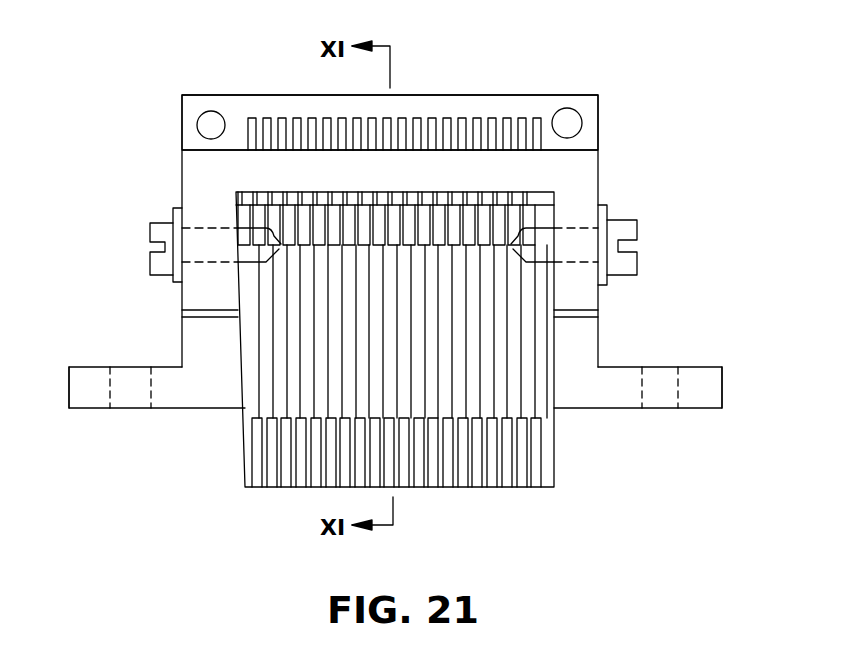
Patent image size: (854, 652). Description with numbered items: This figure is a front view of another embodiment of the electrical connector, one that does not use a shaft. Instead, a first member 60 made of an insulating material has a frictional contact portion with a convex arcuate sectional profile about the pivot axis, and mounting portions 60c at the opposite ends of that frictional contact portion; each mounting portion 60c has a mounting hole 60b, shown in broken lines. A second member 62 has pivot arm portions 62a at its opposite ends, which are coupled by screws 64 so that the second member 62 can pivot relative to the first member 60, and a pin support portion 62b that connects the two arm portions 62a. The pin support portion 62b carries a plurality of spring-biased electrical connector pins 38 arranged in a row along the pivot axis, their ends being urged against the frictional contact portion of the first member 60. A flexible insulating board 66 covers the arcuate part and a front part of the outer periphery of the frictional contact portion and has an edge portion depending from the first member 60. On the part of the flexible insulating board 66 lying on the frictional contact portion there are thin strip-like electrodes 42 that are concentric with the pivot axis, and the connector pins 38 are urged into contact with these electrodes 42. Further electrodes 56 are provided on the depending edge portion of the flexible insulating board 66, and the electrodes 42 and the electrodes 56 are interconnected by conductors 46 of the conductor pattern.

The spring-biased electrical connector pins 38 is at (472, 106).
The thin strip-like electrodes 42 is at (298, 212).
The conductors 46 is at (536, 393).
The electrodes 56 is at (497, 482).
The first member 60 is at (580, 405).
The mounting hole 60b is at (112, 392).
The mounting portions 60c is at (69, 408).
The second member 62 is at (600, 185).
The pivot arm portions 62a is at (188, 306).
The pin support portion 62b is at (578, 167).
The screws 64 is at (151, 230).
The flexible insulating board 66 is at (250, 406).